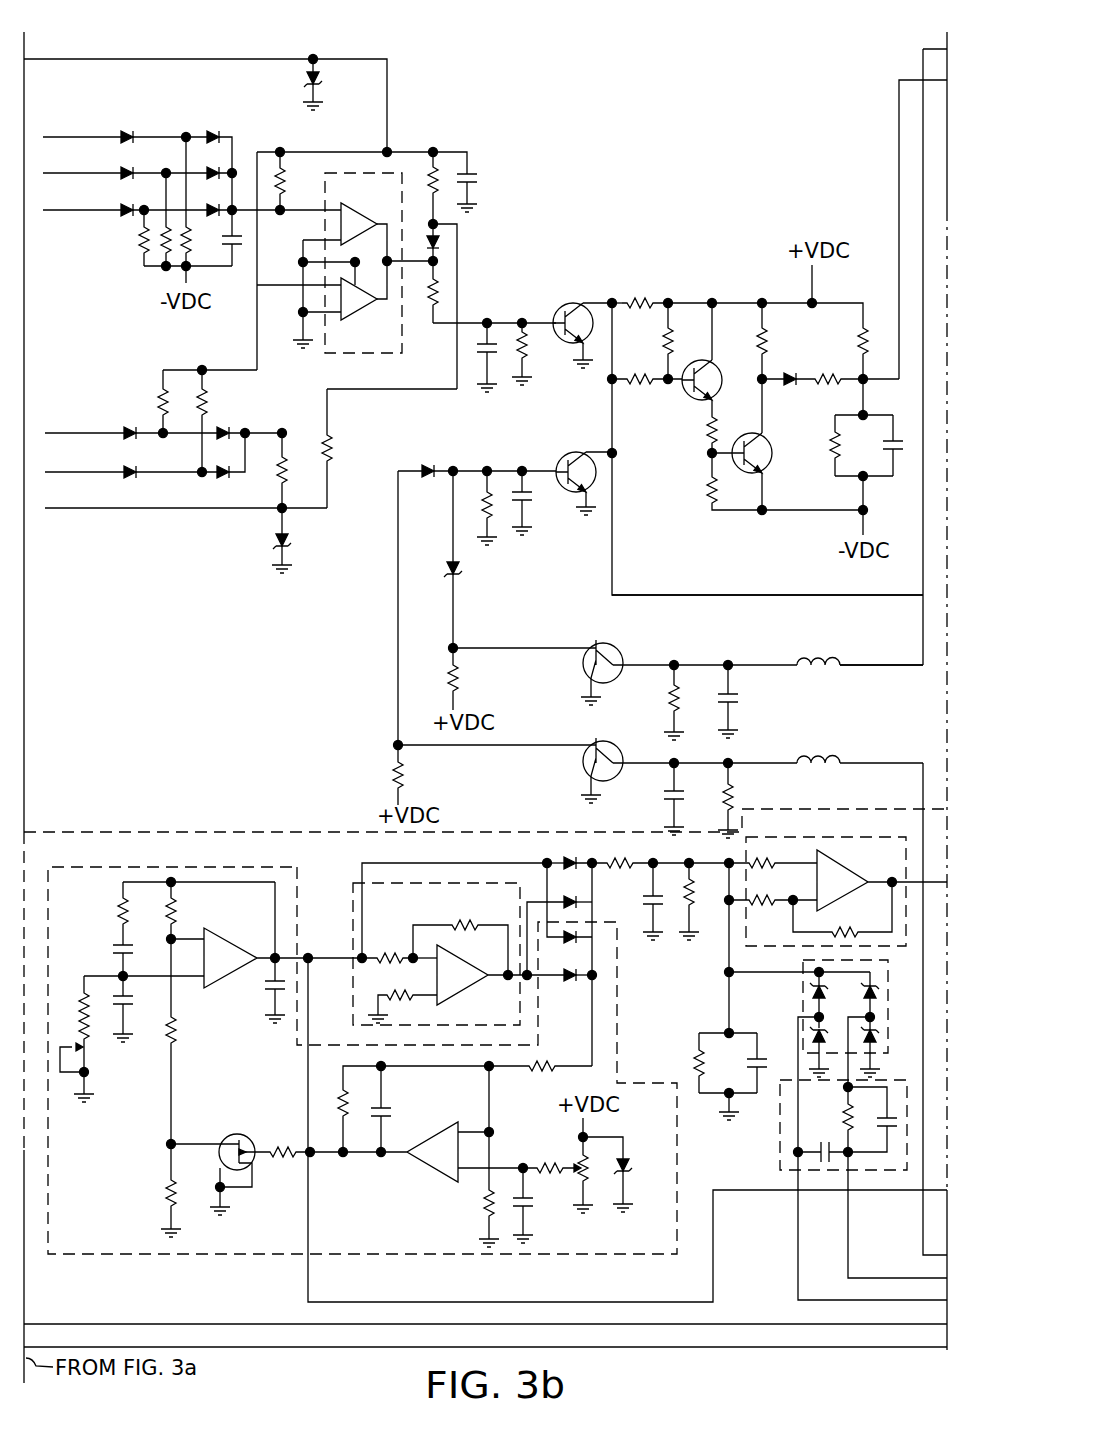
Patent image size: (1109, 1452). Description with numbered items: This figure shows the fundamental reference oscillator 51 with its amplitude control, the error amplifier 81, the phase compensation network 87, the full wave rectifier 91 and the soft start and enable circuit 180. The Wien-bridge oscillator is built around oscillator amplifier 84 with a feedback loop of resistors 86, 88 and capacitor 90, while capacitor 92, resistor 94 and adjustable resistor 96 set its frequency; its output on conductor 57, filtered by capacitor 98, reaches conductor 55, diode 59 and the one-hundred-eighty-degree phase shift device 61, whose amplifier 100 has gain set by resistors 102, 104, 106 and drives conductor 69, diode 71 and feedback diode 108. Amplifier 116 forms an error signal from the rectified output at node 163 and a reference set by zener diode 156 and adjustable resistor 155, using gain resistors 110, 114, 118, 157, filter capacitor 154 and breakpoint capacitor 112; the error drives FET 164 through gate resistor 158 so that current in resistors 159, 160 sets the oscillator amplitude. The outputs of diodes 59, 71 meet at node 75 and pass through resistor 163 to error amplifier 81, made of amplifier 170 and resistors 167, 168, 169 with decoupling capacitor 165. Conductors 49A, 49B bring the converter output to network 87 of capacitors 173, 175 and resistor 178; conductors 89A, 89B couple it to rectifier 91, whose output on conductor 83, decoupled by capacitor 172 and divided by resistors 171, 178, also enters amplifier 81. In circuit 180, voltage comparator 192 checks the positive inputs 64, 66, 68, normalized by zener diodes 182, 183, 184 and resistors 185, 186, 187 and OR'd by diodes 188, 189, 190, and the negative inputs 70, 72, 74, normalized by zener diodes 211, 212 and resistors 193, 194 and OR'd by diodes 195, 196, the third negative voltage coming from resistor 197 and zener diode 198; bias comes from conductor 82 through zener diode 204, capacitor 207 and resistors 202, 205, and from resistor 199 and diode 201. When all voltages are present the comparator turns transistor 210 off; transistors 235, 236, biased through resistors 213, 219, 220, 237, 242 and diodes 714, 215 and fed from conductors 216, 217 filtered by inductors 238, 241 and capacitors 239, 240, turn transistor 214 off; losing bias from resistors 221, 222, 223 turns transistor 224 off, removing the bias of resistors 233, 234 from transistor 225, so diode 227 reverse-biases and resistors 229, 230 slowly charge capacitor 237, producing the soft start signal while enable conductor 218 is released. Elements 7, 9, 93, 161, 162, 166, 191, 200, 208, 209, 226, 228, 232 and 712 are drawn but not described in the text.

The signal line 7 is at (926, 1324).
The signal line 9 is at (926, 1347).
The conductor 49A is at (848, 1270).
The conductor 49B is at (798, 1296).
The fundamental reference oscillator 51 is at (185, 866).
The conductor 55 is at (450, 862).
The conductor 57 is at (320, 954).
The diode 59 is at (570, 858).
The 180° phase shift device 61 is at (353, 905).
The +VDC1 input terminal 64 is at (118, 132).
The +VDC2 input terminal 66 is at (43, 170).
The +VDC3 input terminal 68 is at (43, 207).
The conductor 69 is at (522, 978).
The -VDC1 input terminal 70 is at (116, 428).
The diode 71 is at (570, 897).
The -VDC2 input terminal 72 is at (45, 472).
The -VDC3 input terminal 74 is at (45, 508).
The node point 75 is at (596, 853).
The error amplifier 81 is at (820, 838).
The conductor 82 is at (166, 58).
The conductor 83 is at (766, 975).
The oscillator amplifier means 84 is at (225, 940).
The resistor 86 is at (176, 912).
The phase compensation network 87 is at (778, 1132).
The resistor 88 is at (118, 910).
The conductor 89A is at (798, 1020).
The conductor 89B is at (850, 1015).
The capacitor 90 is at (113, 950).
The full wave rectifier device 91 is at (890, 995).
The capacitor 92 is at (134, 1000).
The output line 93 is at (908, 878).
The resistor 94 is at (80, 1002).
The adjustable resistor 96 is at (89, 1046).
The capacitor 98 is at (268, 986).
The amplifier 100 is at (472, 964).
The resistor 102 is at (391, 950).
The resistor 104 is at (466, 920).
The resistor 106 is at (402, 993).
The diode 108 is at (570, 982).
The resistor 110 is at (540, 1072).
The capacitor 112 is at (387, 1108).
The resistor 114 is at (340, 1108).
The amplifier 116 is at (435, 1128).
The resistor 118 is at (484, 1200).
The capacitor 154 is at (530, 1205).
The adjustable resistor means 155 is at (588, 1172).
The zener diode 156 is at (632, 1165).
The resistor 157 is at (548, 1162).
The gate resistor 158 is at (280, 1148).
The resistor 159 is at (167, 1195).
The resistor 160 is at (177, 1031).
The line 161 is at (167, 1145).
The diode 162 is at (575, 933).
The resistor 163 is at (622, 860).
The field effect transistor 164 is at (241, 1133).
The capacitor 165 is at (646, 898).
The resistor 166 is at (694, 894).
The resistor 167 is at (768, 859).
The resistor 168 is at (771, 906).
The resistor 169 is at (850, 928).
The amplifier 170 is at (847, 862).
The resistor 171 is at (694, 1065).
The capacitor 172 is at (750, 1063).
The capacitor 173 is at (822, 1145).
The capacitor 175 is at (882, 1118).
The resistor 178 is at (845, 1113).
The soft start and enable circuit 180 is at (325, 840).
The zener diode 182 is at (127, 130).
The zener diode 183 is at (130, 169).
The zener diode 184 is at (130, 206).
The resistor 185 is at (140, 242).
The resistor 186 is at (161, 262).
The resistor 187 is at (190, 262).
The diode 188 is at (213, 130).
The diode 189 is at (211, 169).
The diode 190 is at (211, 206).
The capacitor 191 is at (234, 262).
The voltage comparator means 192 is at (364, 356).
The resistor 193 is at (160, 394).
The resistor 194 is at (208, 394).
The diode 195 is at (224, 427).
The diode 196 is at (223, 466).
The resistor 197 is at (286, 456).
The zener diode 198 is at (274, 543).
The resistor 199 is at (331, 440).
The resistor 200 is at (430, 306).
The diode 201 is at (428, 238).
The resistor 202 is at (428, 182).
The zener diode 204 is at (324, 82).
The resistor 205 is at (283, 180).
The filter capacitor 207 is at (482, 177).
The capacitor 208 is at (497, 364).
The resistor 209 is at (527, 354).
The transistor switch means 210 is at (570, 300).
The zener diode 211 is at (130, 426).
The zener diode 212 is at (130, 466).
The resistor 213 is at (483, 507).
The transistor switch means 214 is at (573, 452).
The diode 215 is at (426, 464).
The conductor 216 is at (923, 63).
The conductor 217 is at (870, 760).
The enable conductor 218 is at (724, 592).
The resistor 219 is at (460, 676).
The resistor 220 is at (404, 774).
The resistor 221 is at (642, 300).
The resistor 222 is at (638, 376).
The resistor 223 is at (673, 345).
The transistor 224 is at (715, 360).
The transistor 225 is at (762, 440).
The resistor 226 is at (766, 338).
The diode 227 is at (792, 375).
The resistor 228 is at (828, 375).
The resistor 229 is at (860, 338).
The resistor 230 is at (830, 447).
The line 232 is at (899, 95).
The resistor 233 is at (707, 428).
The resistor 234 is at (707, 490).
The transistor 235 is at (608, 645).
The transistor 236 is at (615, 745).
The resistor 237 is at (886, 448).
The inductor 238 is at (818, 658).
The capacitor 239 is at (736, 698).
The capacitor 240 is at (666, 795).
The inductor 241 is at (821, 757).
The resistor 242 is at (736, 790).
The capacitor 712 is at (528, 500).
The diode 714 is at (446, 568).